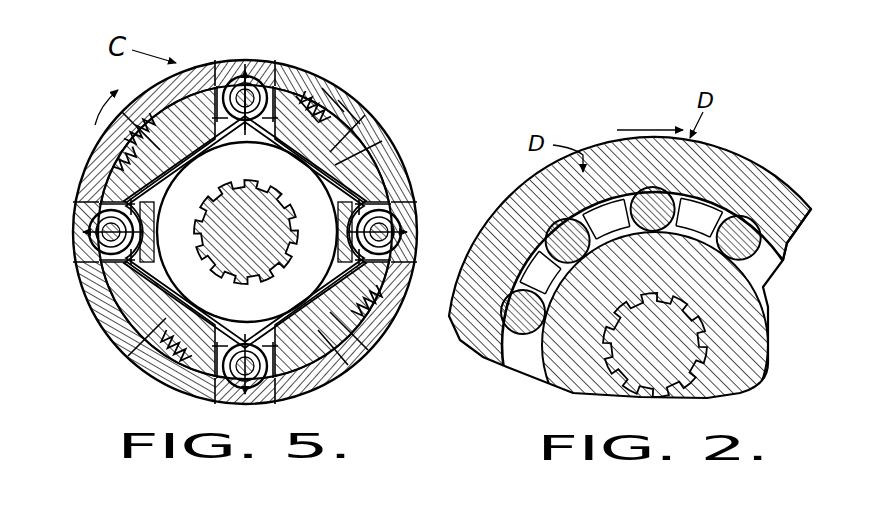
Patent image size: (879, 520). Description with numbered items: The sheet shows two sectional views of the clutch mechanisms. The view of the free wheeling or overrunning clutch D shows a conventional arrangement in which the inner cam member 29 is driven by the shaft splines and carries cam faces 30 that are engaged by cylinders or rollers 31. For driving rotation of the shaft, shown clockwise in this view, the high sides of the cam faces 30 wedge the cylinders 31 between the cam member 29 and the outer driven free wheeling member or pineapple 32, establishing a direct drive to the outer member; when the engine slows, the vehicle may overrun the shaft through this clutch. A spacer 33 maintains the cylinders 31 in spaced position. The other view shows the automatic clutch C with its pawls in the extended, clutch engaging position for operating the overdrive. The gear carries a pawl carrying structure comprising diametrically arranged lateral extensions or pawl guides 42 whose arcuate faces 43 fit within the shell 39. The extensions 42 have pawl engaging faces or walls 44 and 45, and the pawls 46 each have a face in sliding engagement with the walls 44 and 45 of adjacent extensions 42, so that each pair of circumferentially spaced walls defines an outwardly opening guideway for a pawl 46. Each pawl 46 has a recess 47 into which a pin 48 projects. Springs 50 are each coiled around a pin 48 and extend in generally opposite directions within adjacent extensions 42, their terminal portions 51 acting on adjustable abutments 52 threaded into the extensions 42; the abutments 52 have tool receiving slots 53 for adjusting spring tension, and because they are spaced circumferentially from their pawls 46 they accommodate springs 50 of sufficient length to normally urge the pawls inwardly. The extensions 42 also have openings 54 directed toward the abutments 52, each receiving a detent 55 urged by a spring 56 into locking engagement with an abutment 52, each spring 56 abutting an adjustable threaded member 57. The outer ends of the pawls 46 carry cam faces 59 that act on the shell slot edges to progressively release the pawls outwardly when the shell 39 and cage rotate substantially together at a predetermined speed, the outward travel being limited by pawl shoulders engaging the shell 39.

In FIG. 2, the inner cam member 29 is at (745, 312).
In FIG. 2, the cam faces 30 is at (712, 237).
In FIG. 2, the cylinders or rollers 31 is at (548, 186).
In FIG. 2, the outer driven free wheeling member or pineapple 32 is at (770, 188).
In FIG. 2, the spacer 33 is at (750, 172).
In FIG. 5, the shell 39 is at (290, 60).
In FIG. 5, the lateral extensions or pawl guides 42 is at (407, 157).
In FIG. 5, the arcuate faces 43 is at (387, 133).
In FIG. 5, the pawl engaging face or wall 44 is at (400, 190).
In FIG. 5, the pawl engaging face or wall 45 is at (317, 80).
In FIG. 5, the pawls 46 is at (422, 210).
In FIG. 5, the recess 47 is at (420, 240).
In FIG. 5, the pin 48 is at (420, 226).
In FIG. 5, the springs 50 is at (160, 186).
In FIG. 5, the terminal portions 51 is at (323, 307).
In FIG. 5, the adjustable abutments 52 is at (383, 343).
In FIG. 5, the tool receiving slots 53 is at (353, 357).
In FIG. 5, the openings 54 is at (400, 278).
In FIG. 5, the detent 55 is at (357, 108).
In FIG. 5, the spring 56 is at (340, 102).
In FIG. 5, the adjustable threaded member 57 is at (335, 90).
In FIG. 5, the cam faces 59 is at (249, 28).